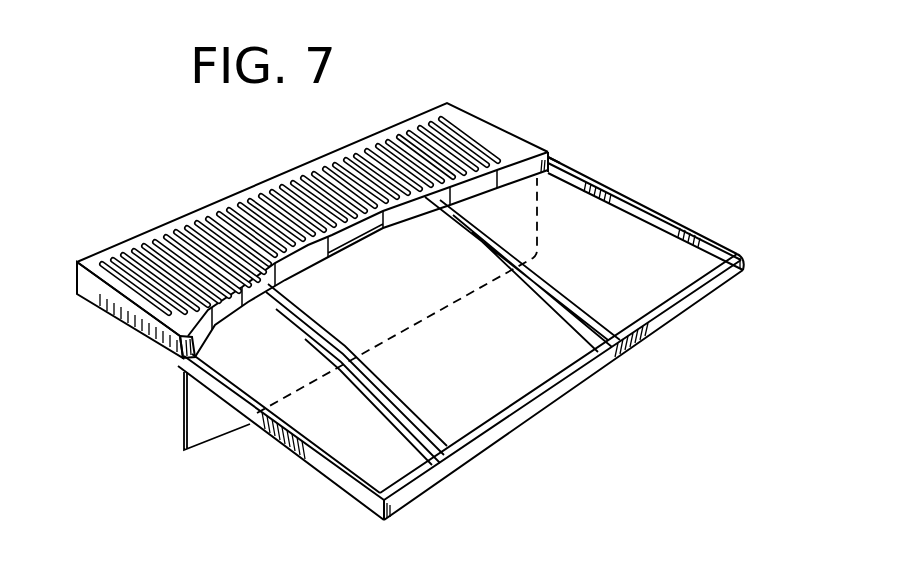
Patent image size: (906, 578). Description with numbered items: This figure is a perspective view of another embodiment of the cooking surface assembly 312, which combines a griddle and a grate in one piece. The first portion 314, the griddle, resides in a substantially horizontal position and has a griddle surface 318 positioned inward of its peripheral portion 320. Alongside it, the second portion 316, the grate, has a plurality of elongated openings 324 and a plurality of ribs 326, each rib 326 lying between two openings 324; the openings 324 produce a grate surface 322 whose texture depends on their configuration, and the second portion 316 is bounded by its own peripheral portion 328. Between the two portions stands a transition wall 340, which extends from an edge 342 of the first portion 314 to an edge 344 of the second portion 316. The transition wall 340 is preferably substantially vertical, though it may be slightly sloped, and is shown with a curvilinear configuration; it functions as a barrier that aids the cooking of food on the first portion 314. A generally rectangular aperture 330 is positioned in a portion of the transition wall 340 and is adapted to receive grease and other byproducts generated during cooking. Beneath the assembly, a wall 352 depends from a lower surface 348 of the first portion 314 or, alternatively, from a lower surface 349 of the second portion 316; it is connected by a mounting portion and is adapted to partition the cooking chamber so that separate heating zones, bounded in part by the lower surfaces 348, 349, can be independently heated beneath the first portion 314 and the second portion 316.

The cooking surface assembly 312 is at (690, 138).
The first portion 314 is at (692, 213).
The second portion 316 is at (528, 156).
The griddle surface 318 is at (460, 412).
The peripheral portion 320 is at (742, 240).
The grate surface 322 is at (177, 331).
The openings 324 is at (197, 224).
The ribs 326 is at (231, 206).
The peripheral portion 328 is at (90, 256).
The aperture 330 is at (363, 237).
The transition wall 340 is at (552, 158).
The edge 342 is at (497, 188).
The edge 344 is at (526, 165).
The lower surface 348 is at (313, 478).
The lower surface 349 is at (113, 323).
The wall 352 is at (226, 421).